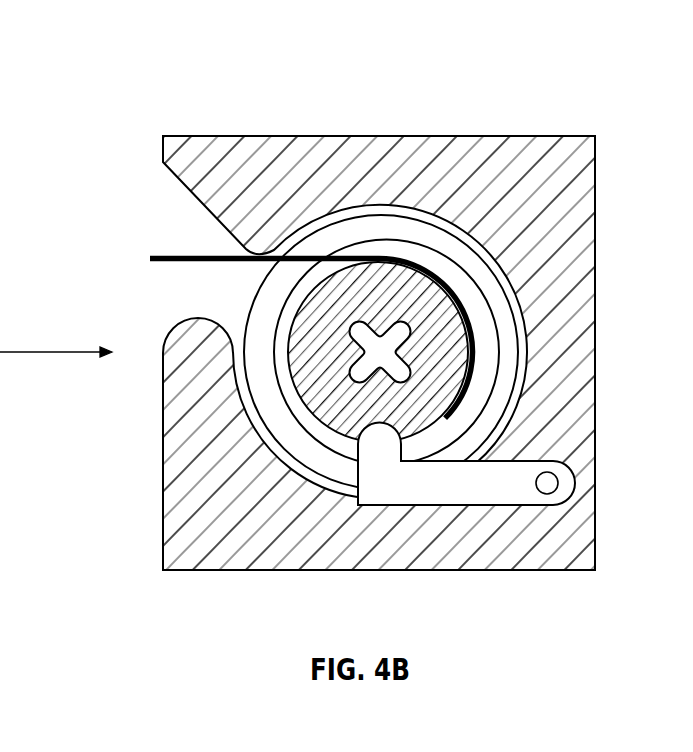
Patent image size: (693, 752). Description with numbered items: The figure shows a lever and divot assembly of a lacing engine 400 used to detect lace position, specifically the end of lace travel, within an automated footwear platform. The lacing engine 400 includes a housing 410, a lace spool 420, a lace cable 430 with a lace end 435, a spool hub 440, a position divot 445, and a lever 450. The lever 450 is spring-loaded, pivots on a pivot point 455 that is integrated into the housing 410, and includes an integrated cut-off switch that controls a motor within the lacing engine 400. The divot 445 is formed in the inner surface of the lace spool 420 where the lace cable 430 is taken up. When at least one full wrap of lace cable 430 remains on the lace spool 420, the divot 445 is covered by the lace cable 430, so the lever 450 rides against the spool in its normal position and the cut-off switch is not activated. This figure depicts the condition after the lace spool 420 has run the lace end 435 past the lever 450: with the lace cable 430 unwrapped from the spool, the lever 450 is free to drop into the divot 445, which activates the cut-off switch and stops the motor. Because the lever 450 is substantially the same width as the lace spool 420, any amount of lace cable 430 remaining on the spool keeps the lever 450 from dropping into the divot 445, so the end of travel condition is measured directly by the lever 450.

The lacing engine 400 is at (359, 340).
The housing 410 is at (163, 152).
The lace spool 420 is at (245, 318).
The lace cable 430 is at (158, 236).
The lace end 435 is at (474, 380).
The spool hub 440 is at (395, 346).
The position divot 445 is at (382, 420).
The lever 450 is at (428, 525).
The pivot point 455 is at (553, 488).